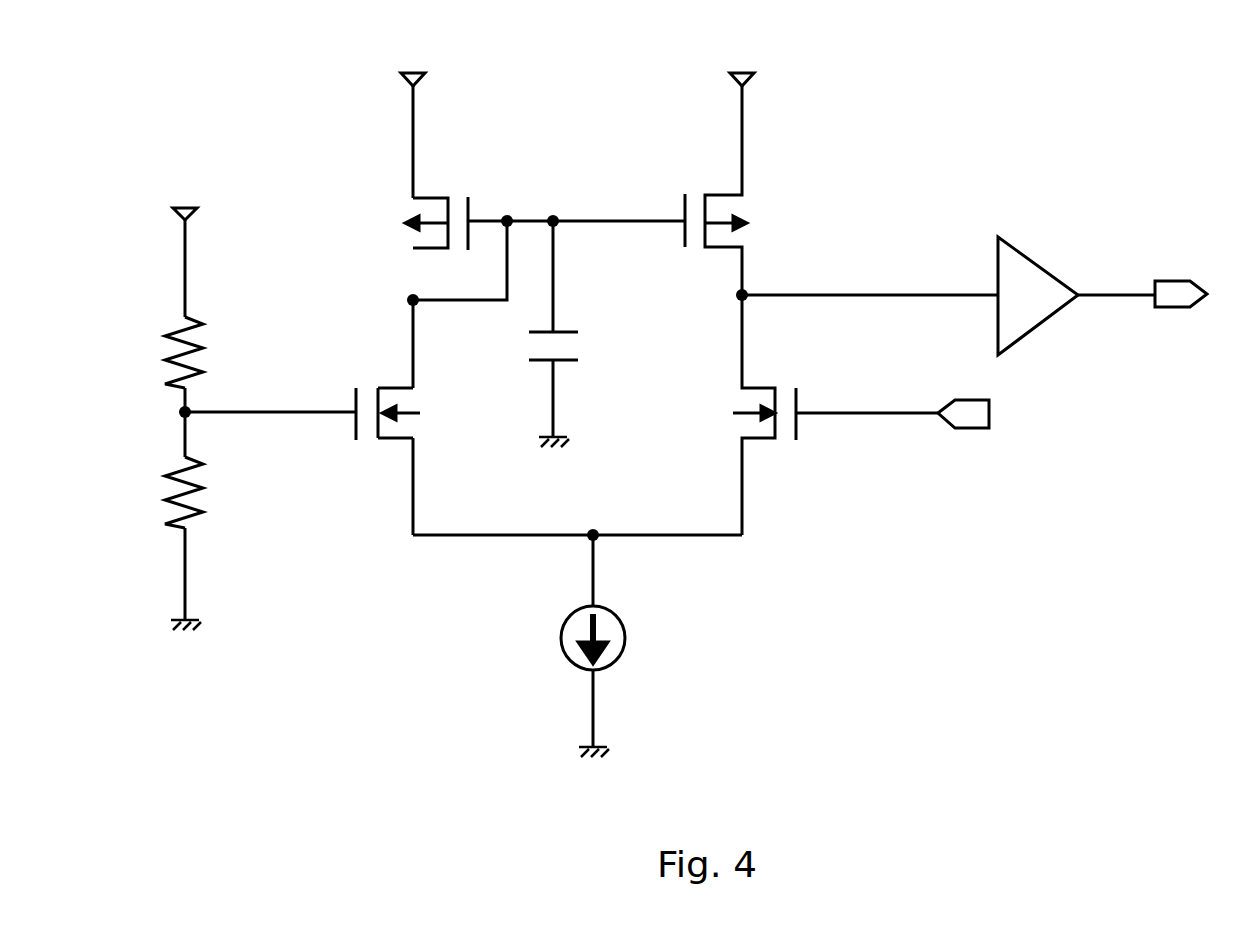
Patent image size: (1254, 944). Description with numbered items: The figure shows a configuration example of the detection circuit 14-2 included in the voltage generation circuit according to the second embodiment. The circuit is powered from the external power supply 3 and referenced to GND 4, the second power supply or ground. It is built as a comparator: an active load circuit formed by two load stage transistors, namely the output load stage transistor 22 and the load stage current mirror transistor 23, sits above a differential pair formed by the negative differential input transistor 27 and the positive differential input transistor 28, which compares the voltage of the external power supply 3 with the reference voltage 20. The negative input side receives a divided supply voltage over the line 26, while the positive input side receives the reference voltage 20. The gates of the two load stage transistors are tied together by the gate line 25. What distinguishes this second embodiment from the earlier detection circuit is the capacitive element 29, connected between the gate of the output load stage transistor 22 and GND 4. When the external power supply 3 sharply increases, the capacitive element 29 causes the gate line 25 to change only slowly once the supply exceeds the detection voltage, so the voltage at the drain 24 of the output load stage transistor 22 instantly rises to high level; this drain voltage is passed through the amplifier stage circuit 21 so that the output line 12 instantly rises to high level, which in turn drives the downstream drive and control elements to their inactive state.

The external power supply VDD 3 is at (186, 207).
The GND 4 is at (190, 624).
The output line 12 is at (1176, 280).
The detection circuit 14-2 is at (1017, 50).
The reference voltage 20 is at (985, 430).
The amplifier stage circuit 21 is at (1052, 268).
The output load stage transistor 22 is at (748, 196).
The load stage current mirror transistor 23 is at (404, 206).
The drain 24 is at (872, 295).
The gate line 25 is at (586, 220).
The reference voltage wire 26 is at (243, 414).
The negative differential input transistor 27 is at (360, 387).
The positive differential input transistor 28 is at (780, 445).
The capacitive element 29 is at (562, 330).